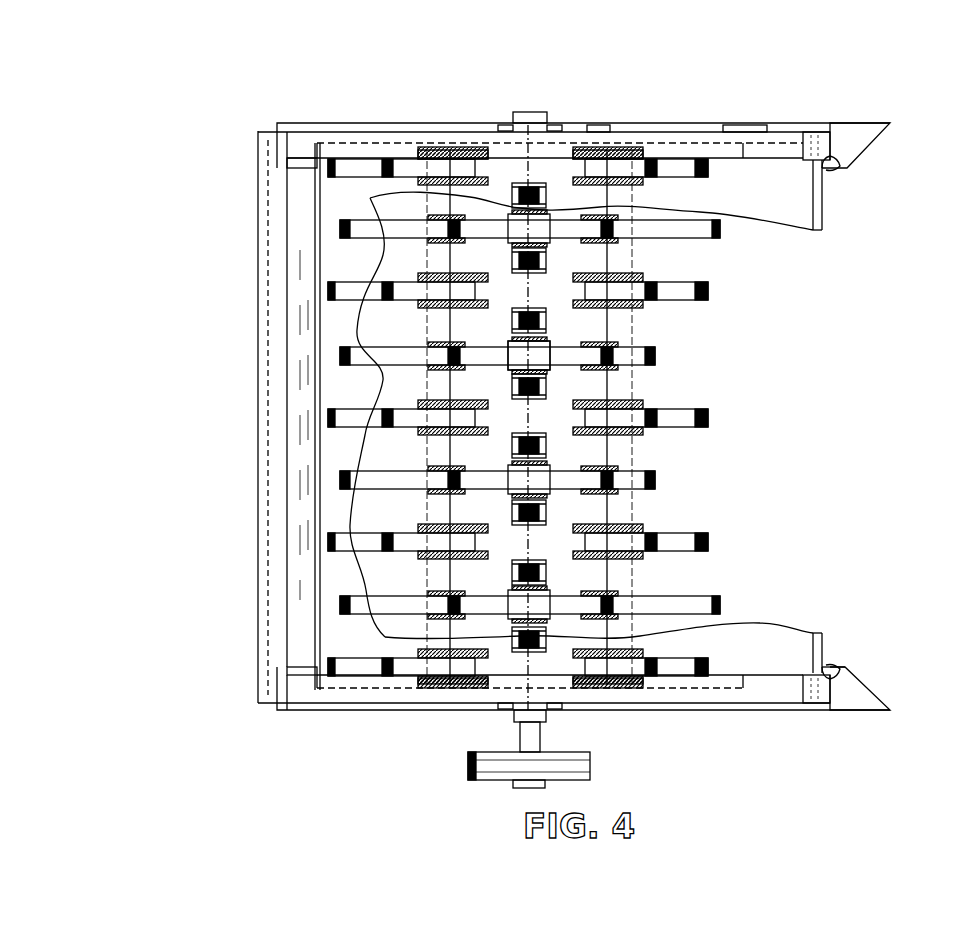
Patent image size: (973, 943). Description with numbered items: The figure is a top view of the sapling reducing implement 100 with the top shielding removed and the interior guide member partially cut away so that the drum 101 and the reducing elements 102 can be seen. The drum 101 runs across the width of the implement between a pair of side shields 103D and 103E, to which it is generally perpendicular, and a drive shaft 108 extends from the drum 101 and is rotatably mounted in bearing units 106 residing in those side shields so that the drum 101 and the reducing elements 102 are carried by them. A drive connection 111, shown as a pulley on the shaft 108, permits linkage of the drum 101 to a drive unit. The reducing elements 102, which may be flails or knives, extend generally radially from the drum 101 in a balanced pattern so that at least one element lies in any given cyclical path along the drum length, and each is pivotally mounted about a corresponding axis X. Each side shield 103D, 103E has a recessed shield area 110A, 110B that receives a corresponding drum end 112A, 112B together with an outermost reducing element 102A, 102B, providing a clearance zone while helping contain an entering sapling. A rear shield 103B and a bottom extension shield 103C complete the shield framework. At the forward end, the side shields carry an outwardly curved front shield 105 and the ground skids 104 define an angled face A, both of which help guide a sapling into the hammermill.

The sapling reducing implement 100 is at (158, 102).
The drum 101 is at (507, 210).
The reducing elements 102 is at (540, 302).
The outermost reducing element 102A is at (340, 657).
The outermost reducing element 102B is at (337, 177).
The rear shield 103B is at (268, 518).
The bottom extension shield 103C is at (300, 455).
The side shield 103D is at (778, 698).
The side shield 103E is at (778, 137).
The ground skids 104 is at (327, 125).
The outwardly curved front shield 105 is at (837, 162).
The bearing units 106 is at (550, 122).
The drive shaft 108 is at (517, 737).
The recessed shield area 110A is at (717, 683).
The recessed shield area 110B is at (723, 150).
The drive connection 111 is at (468, 777).
The drum end 112A is at (560, 687).
The drum end 112B is at (567, 150).
The angled face A is at (877, 140).
The axis X is at (533, 360).